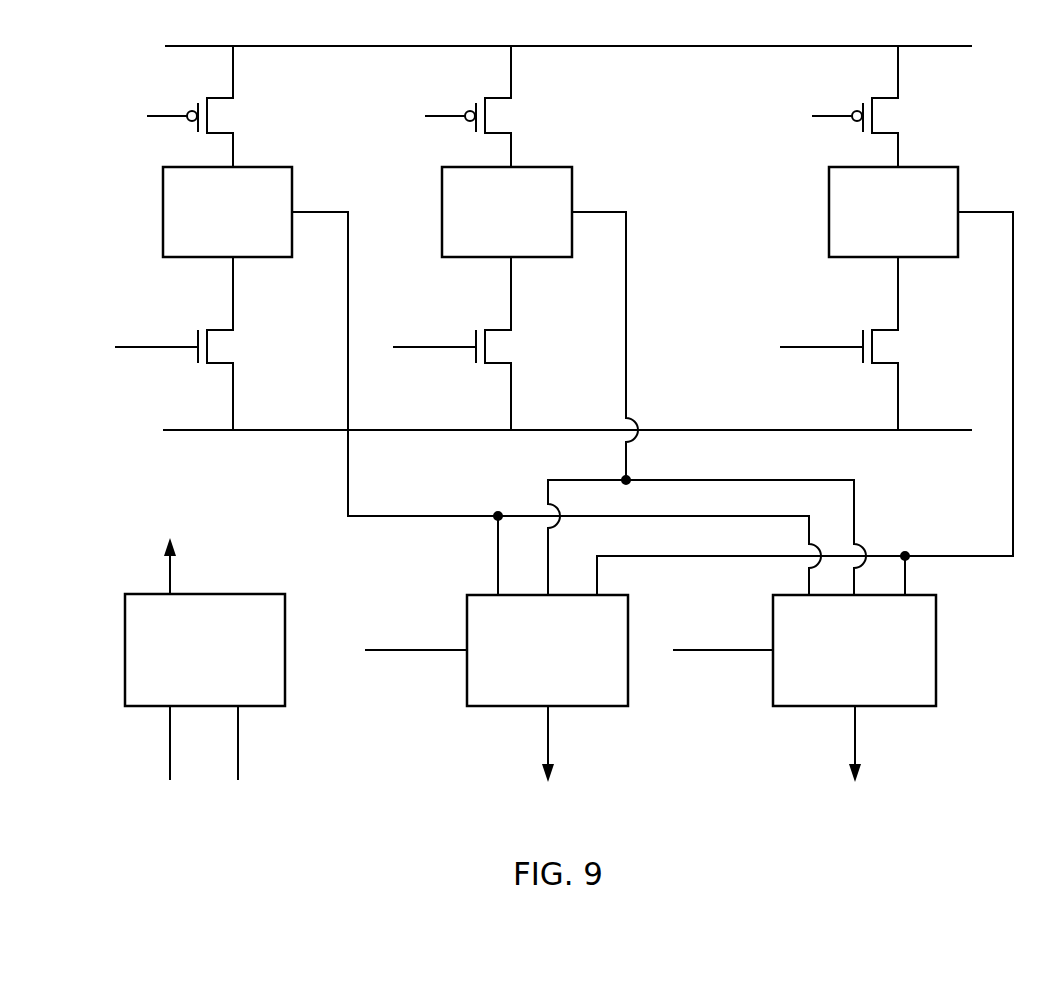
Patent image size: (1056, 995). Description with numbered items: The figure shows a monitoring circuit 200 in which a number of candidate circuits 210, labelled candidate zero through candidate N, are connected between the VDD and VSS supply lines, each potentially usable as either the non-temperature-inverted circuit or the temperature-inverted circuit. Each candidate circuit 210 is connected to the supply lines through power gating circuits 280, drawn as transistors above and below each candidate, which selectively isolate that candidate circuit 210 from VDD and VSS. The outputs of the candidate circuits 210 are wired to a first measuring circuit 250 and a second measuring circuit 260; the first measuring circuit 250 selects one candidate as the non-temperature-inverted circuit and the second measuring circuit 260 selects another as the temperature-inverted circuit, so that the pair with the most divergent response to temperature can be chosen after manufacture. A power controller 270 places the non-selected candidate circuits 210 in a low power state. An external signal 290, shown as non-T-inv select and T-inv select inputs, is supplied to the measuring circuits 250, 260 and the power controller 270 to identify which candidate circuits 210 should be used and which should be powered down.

The candidate selection circuit 200 is at (129, 152).
The candidate circuit 210 is at (292, 167).
The first measuring circuit 250 is at (497, 706).
The second measuring circuit 260 is at (805, 706).
The power controller 270 is at (125, 650).
The power gating circuit 280 is at (220, 98).
The external signal 290 is at (170, 755).